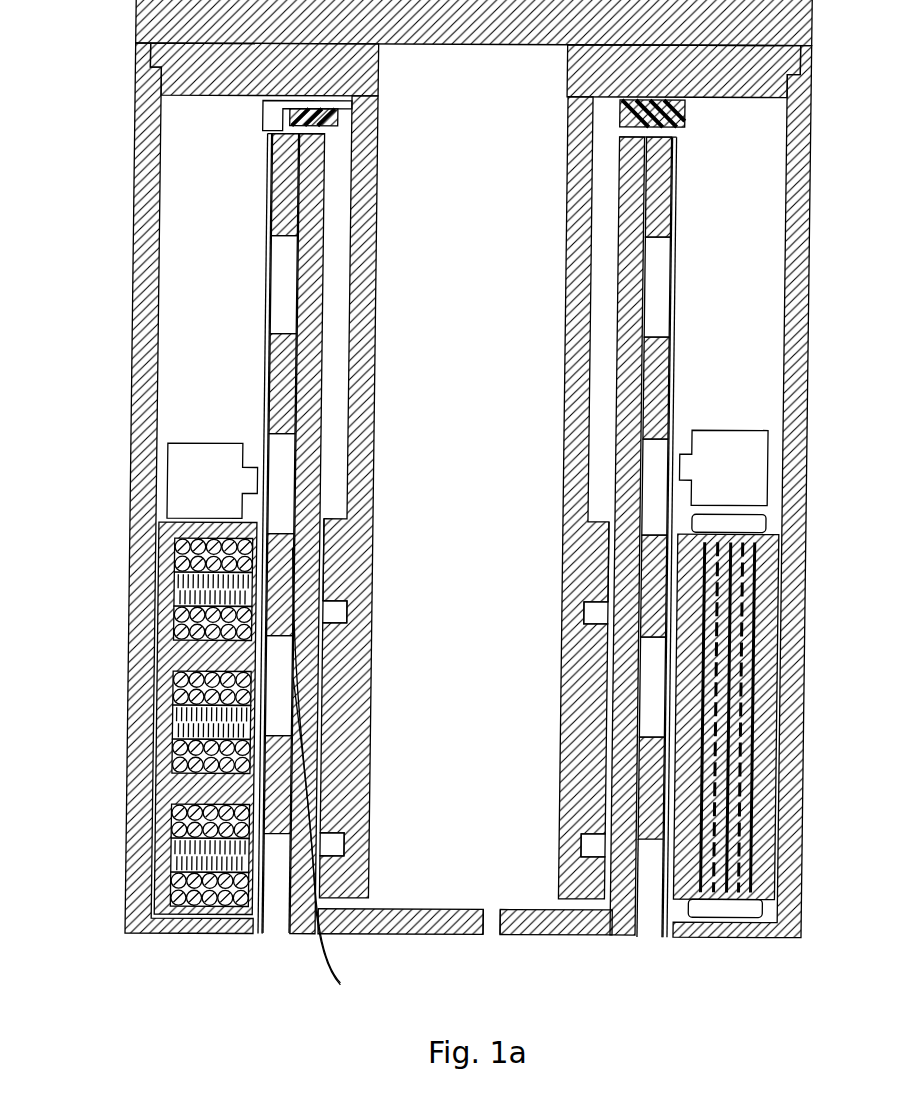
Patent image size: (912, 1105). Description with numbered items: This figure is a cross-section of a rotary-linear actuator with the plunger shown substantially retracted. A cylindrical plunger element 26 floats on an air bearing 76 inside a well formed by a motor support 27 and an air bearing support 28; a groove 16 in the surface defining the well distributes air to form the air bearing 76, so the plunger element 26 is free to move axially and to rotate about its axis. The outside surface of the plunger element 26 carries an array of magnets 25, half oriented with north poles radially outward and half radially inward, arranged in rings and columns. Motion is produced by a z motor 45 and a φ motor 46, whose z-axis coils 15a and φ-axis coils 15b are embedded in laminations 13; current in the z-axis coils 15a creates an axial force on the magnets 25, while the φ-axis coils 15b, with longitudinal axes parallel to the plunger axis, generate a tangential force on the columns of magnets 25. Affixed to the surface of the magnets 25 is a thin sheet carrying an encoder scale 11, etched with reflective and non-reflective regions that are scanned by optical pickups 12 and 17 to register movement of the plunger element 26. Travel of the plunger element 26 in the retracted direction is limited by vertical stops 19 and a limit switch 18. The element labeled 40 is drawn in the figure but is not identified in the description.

The encoder scale 11 is at (268, 158).
The optical pickup 12 is at (241, 443).
The laminations 13 is at (162, 913).
The z-axis coils 15a is at (180, 593).
The φ-axis coils 15b is at (734, 712).
The groove 16 is at (591, 610).
The optical pickup 17 is at (703, 428).
The limit switch 18 is at (263, 103).
The vertical stops 19 is at (338, 118).
The magnets 25 is at (274, 164).
The plunger element 26 is at (600, 936).
The motor support 27 is at (791, 150).
The air bearing support 28 is at (378, 96).
The tube opening 40 is at (290, 948).
The z motor 45 is at (244, 910).
The φ motor 46 is at (765, 920).
The air bearing 76 is at (606, 562).